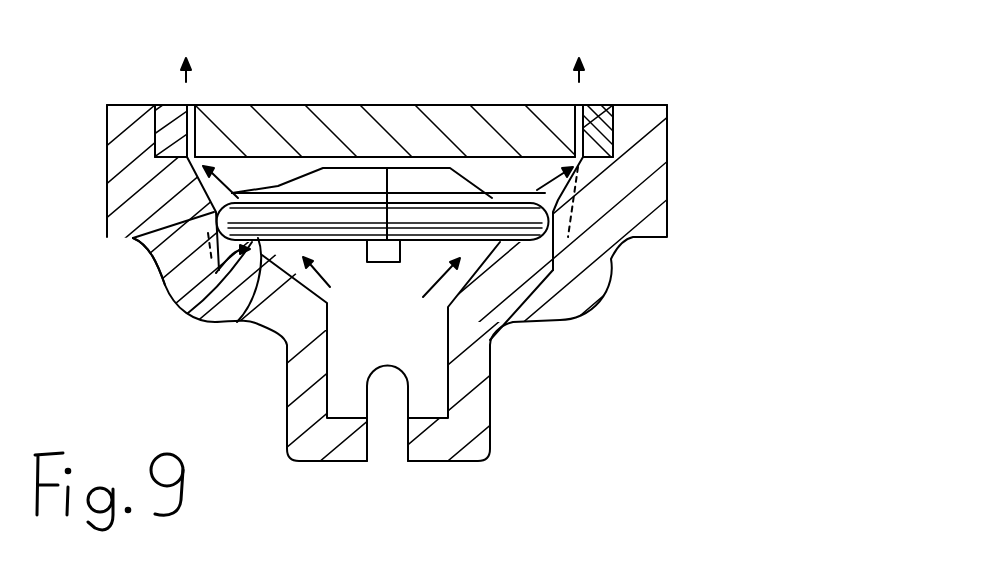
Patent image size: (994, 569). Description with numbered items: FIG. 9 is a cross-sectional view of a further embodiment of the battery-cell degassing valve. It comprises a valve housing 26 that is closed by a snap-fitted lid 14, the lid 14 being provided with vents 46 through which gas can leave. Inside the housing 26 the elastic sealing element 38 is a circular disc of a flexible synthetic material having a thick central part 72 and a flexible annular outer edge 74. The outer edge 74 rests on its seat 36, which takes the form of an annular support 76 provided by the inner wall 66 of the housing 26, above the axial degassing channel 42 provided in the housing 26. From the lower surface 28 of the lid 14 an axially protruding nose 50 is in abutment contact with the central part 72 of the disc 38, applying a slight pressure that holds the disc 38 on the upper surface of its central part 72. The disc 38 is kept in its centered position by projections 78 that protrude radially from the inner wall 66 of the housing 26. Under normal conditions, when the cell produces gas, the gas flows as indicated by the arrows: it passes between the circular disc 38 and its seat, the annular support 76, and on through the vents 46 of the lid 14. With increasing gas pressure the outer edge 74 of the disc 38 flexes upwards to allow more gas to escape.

The lid 14 is at (262, 128).
The lower surface of the lid 28 is at (268, 168).
The nose 50 is at (374, 168).
The central part 72 is at (447, 183).
The outer edge 74 is at (516, 225).
The vents 46 is at (590, 123).
The elastic sealing element 38 is at (245, 193).
The projections 78 is at (150, 247).
The seat 36 is at (188, 313).
The annular support 76 is at (247, 258).
The valve housing 26 is at (585, 283).
The inner wall 66 is at (477, 283).
The axial degassing channel 42 is at (385, 448).